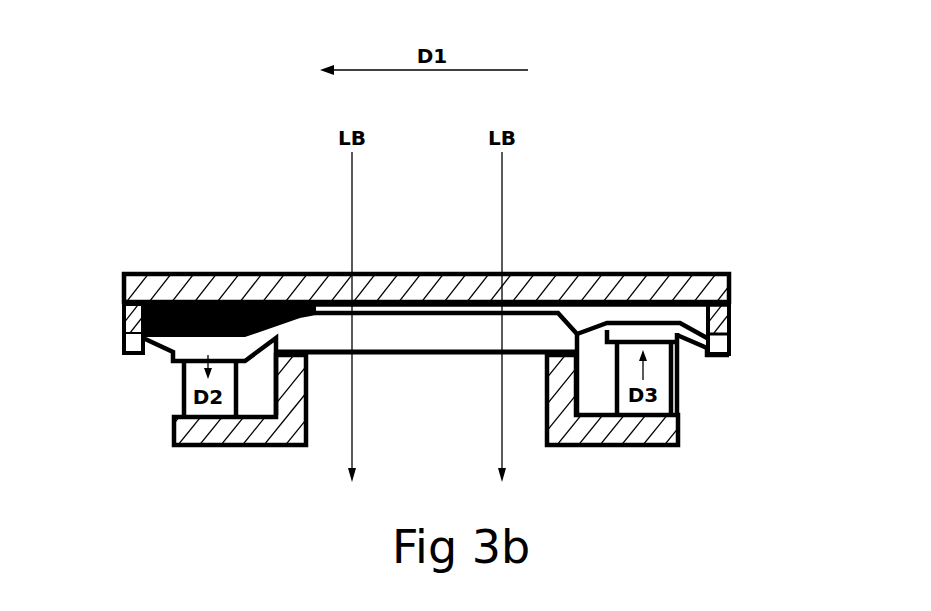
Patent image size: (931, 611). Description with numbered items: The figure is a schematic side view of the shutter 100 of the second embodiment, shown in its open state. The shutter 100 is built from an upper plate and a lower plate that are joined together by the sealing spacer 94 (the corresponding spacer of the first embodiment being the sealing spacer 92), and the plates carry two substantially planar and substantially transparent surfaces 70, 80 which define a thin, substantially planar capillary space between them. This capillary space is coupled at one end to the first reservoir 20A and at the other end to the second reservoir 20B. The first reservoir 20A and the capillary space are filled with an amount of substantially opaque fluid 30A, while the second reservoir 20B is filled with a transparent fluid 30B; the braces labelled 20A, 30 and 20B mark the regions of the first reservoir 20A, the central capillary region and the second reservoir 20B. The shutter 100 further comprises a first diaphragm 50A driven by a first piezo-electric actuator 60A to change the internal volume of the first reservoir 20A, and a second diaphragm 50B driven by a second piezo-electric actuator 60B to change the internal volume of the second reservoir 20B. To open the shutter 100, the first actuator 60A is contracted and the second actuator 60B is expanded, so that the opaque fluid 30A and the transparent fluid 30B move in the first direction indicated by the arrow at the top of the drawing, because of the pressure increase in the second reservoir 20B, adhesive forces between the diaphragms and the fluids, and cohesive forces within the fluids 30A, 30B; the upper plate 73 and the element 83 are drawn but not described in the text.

The shutter 100 is at (178, 143).
The top plate / substrate 73 is at (735, 276).
The sealing spacer 92 is at (123, 312).
The opaque fluid 30A is at (172, 300).
The transparent fluid 30B is at (672, 320).
The mirror region 30 is at (297, 263).
The first reservoir 20A is at (143, 263).
The second reservoir 20B is at (552, 263).
The transparent surface 70 is at (446, 300).
The transparent surface 80 is at (400, 316).
The support bar 83 is at (733, 346).
The first diaphragm 50A is at (176, 376).
The second diaphragm 50B is at (677, 355).
The first piezo-electric actuator 60A is at (181, 395).
The second piezo-electric actuator 60B is at (674, 386).
The sealing spacer 94 is at (262, 448).